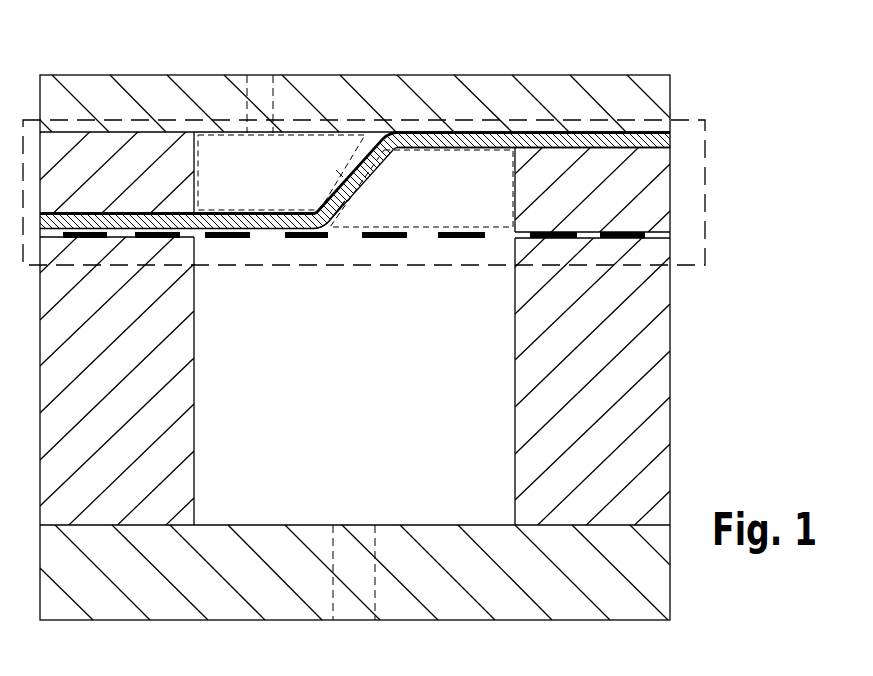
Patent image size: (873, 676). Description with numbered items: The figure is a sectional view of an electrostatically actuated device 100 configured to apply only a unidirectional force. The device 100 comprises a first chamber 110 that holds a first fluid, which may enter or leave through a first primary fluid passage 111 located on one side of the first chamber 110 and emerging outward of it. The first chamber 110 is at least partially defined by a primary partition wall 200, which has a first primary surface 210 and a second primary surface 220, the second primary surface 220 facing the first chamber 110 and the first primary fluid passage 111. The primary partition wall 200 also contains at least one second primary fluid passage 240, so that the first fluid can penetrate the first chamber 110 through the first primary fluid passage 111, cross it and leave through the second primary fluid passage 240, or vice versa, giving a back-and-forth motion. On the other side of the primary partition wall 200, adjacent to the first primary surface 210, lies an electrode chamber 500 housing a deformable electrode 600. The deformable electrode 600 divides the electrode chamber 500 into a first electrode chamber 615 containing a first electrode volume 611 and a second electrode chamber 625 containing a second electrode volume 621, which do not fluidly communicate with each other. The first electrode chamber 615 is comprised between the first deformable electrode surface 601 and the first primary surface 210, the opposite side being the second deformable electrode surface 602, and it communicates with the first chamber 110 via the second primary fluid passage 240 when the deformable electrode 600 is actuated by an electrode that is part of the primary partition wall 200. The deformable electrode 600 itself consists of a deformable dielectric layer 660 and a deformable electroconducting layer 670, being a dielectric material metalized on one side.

The electrostatically actuated device 100 is at (745, 85).
The first chamber 110 is at (334, 407).
The first primary fluid passage 111 is at (358, 572).
The primary partition wall 200 is at (297, 240).
The first primary surface 210 is at (388, 231).
The second primary surface 220 is at (384, 240).
The second primary fluid passage 240 is at (344, 229).
The electrode chamber 500 is at (690, 266).
The deformable electrode 600 is at (316, 213).
The first deformable electrode surface 601 is at (267, 237).
The second deformable electrode surface 602 is at (340, 174).
The first electrode volume 611 is at (497, 229).
The first electrode chamber 615 is at (492, 212).
The second electrode volume 621 is at (230, 135).
The second electrode chamber 625 is at (260, 197).
The deformable dielectric layer 660 is at (478, 131).
The deformable electroconducting layer 670 is at (402, 131).